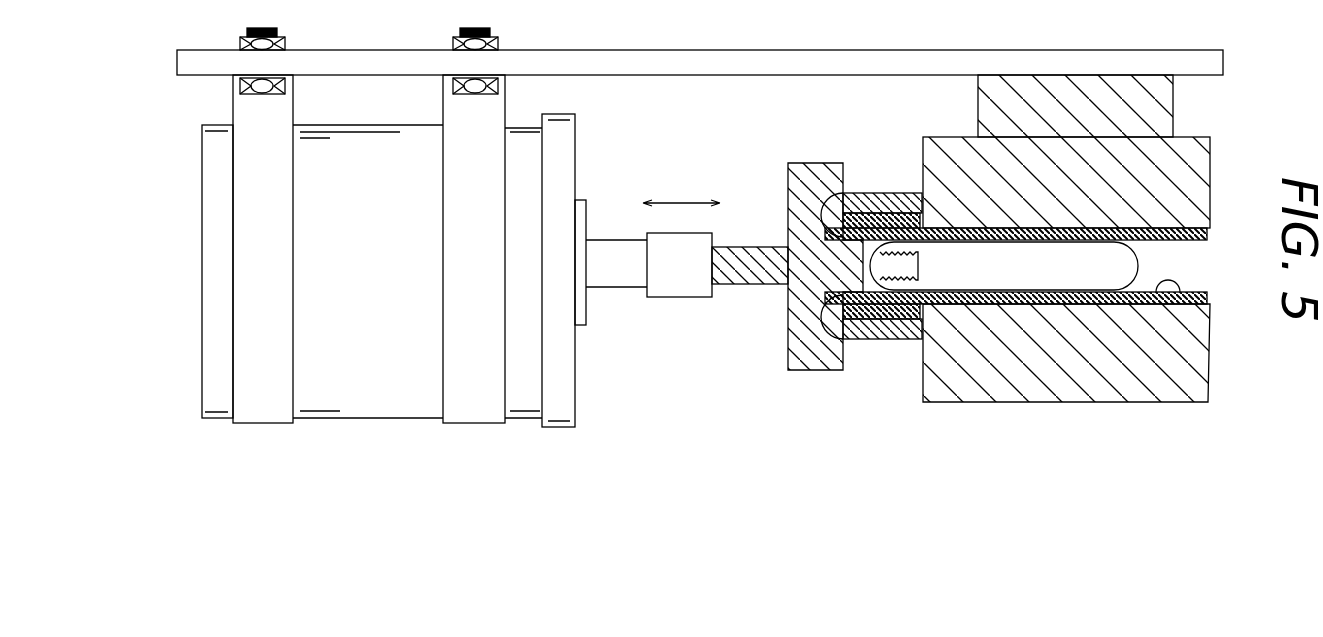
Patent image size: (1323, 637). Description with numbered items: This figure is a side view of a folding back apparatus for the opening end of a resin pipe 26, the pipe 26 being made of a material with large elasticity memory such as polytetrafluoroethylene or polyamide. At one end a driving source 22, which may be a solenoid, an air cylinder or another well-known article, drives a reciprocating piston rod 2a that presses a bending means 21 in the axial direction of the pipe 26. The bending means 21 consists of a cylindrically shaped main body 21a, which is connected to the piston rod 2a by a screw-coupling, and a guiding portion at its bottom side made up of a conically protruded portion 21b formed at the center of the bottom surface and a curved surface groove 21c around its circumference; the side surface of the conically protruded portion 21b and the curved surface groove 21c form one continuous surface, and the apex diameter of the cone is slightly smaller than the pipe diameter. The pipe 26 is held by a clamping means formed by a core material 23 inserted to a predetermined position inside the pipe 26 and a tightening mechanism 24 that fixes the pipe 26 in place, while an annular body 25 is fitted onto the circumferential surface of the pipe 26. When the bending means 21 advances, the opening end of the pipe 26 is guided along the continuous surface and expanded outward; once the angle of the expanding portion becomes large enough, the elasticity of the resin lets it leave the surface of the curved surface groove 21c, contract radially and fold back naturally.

The driving source 22 is at (373, 417).
The coupling 2a is at (670, 297).
The bending means 21 is at (761, 366).
The main body 21a is at (805, 163).
The conically protruded portion 21b is at (873, 203).
The curved surface groove 21c is at (812, 345).
The annular body 25 is at (910, 195).
The tightening mechanism 24 is at (947, 142).
The core material 23 is at (1040, 280).
The resin pipe 26 is at (1160, 295).